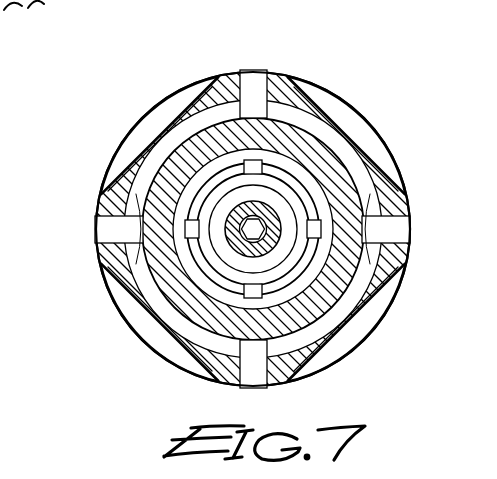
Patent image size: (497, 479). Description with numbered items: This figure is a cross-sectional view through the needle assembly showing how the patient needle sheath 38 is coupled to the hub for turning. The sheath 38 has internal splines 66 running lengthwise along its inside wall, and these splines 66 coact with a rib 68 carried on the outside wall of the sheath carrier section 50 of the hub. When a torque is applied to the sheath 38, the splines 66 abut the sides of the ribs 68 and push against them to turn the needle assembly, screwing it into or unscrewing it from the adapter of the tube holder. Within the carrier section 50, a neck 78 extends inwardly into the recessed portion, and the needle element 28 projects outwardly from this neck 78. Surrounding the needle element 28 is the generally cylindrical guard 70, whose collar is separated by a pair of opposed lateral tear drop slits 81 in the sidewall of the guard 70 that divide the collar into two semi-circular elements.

The patient needle sheath 38 is at (318, 86).
The sheath carrier section 50 is at (154, 291).
The guard 70 is at (226, 148).
The internal splines 66 is at (250, 95).
The rib 68 is at (167, 141).
The tear drop slits 81 is at (136, 217).
The needle element 28 is at (274, 214).
The neck 78 is at (232, 245).